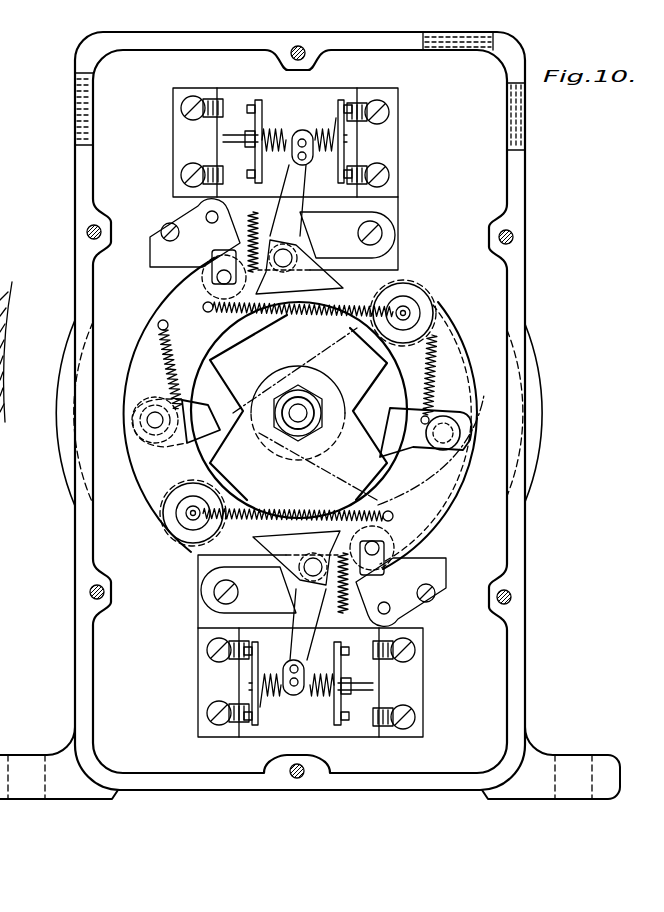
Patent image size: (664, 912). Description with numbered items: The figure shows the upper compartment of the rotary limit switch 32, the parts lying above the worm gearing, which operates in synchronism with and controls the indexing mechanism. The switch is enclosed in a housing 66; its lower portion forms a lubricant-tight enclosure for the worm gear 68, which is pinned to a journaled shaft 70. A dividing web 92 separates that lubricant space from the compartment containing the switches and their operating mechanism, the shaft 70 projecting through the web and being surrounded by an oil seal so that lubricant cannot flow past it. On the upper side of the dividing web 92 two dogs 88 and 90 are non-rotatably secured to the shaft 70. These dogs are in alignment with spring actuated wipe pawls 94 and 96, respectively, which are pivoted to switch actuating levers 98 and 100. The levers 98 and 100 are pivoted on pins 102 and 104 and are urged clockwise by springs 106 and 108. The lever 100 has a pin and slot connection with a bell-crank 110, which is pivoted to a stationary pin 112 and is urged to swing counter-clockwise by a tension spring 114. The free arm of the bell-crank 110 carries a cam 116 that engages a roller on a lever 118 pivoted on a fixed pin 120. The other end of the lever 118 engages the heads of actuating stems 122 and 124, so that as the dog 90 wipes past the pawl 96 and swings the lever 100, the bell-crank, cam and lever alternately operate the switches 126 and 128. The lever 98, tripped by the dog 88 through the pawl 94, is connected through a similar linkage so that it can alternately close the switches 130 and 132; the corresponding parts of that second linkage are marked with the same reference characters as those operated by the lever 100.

The rotary limit switch 32 is at (530, 205).
The housing 66 is at (62, 450).
The worm gear 68 is at (0, 271).
The shaft 70 is at (308, 410).
The dog 88 is at (397, 479).
The dog 90 is at (230, 350).
The dividing web 92 is at (100, 562).
The wipe pawl 94 is at (423, 458).
The wipe pawl 96 is at (193, 447).
The switch actuating lever 98 is at (466, 388).
The switch actuating lever 100 is at (137, 355).
The pin 102 is at (406, 311).
The pin 104 is at (188, 520).
The spring 106 is at (200, 553).
The spring 108 is at (350, 308).
The bell-crank 110 is at (203, 262).
The stationary pin 112 is at (207, 217).
The tension spring 114 is at (210, 268).
The cam 116 is at (293, 262).
The lever 118 is at (340, 222).
The fixed pin 120 is at (312, 202).
The actuating stem 122 is at (225, 136).
The actuating stem 124 is at (342, 130).
The switch 126 is at (263, 117).
The switch 128 is at (338, 120).
The switch 130 is at (340, 715).
The switch 132 is at (272, 717).